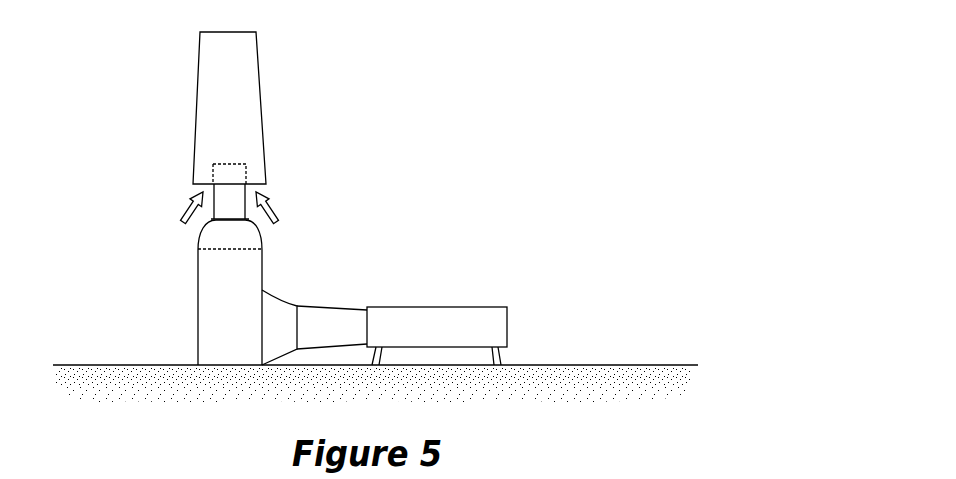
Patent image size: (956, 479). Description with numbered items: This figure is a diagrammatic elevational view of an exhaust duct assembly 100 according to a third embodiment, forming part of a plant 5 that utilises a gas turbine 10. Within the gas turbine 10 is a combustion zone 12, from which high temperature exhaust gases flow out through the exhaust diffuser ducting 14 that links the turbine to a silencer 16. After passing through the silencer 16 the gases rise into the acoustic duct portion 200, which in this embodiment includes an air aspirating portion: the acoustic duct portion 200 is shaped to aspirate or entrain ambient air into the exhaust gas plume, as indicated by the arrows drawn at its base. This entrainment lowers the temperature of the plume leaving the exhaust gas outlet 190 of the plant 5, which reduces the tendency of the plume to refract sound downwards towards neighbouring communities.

The exhaust gas outlet 190 is at (233, 32).
The acoustic duct portion 200 is at (213, 92).
The silencer 16 is at (197, 271).
The exhaust diffuser ducting 14 is at (337, 306).
The gas turbine 10 is at (420, 307).
The combustion zone 12 is at (463, 325).
The exhaust duct assembly 100 is at (310, 193).
The plant 5 is at (572, 173).